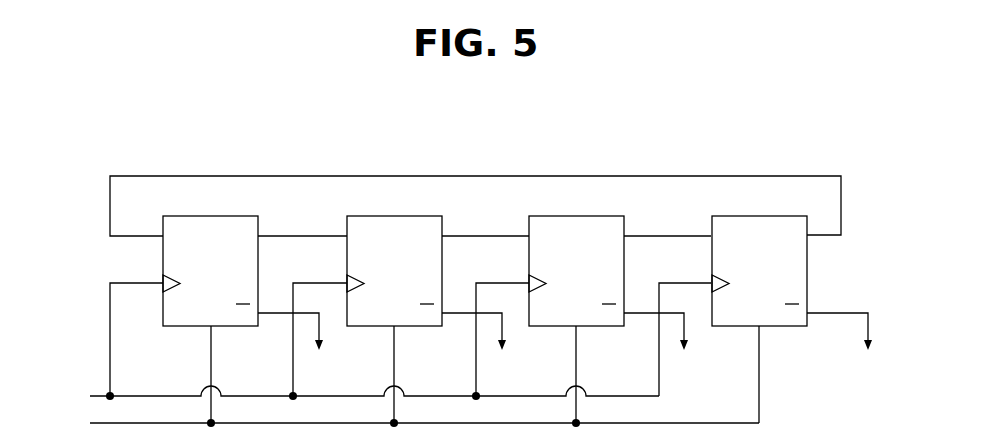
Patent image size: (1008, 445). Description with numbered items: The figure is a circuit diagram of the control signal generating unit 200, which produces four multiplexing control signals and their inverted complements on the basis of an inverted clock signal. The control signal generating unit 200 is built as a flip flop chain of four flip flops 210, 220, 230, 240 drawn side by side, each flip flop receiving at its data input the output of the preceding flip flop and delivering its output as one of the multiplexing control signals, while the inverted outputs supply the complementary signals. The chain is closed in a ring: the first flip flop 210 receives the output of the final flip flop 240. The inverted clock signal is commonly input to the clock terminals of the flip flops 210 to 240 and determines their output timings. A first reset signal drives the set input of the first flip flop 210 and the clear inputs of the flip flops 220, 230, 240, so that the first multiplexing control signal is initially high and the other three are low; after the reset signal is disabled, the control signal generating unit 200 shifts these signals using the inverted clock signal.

The control signal generating unit 200 is at (840, 131).
The first flip flop 210 is at (233, 214).
The second flip flop 220 is at (417, 214).
The third flip flop 230 is at (599, 214).
The final flip flop 240 is at (781, 214).